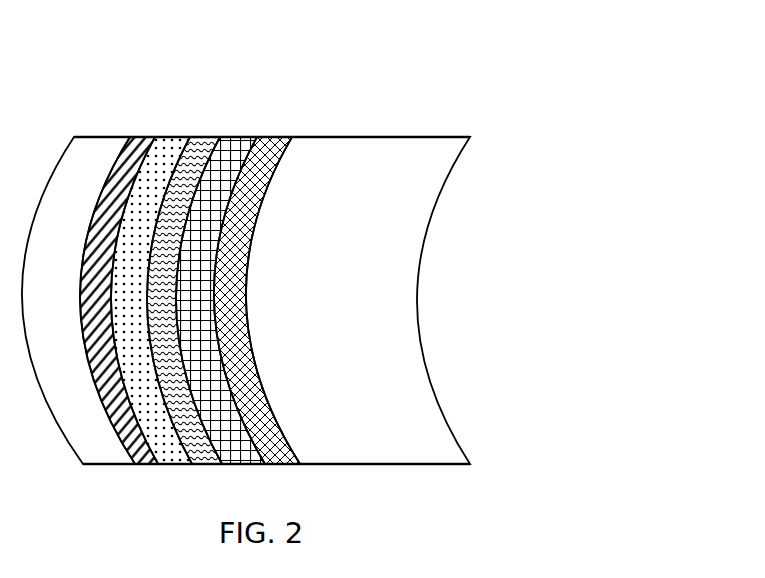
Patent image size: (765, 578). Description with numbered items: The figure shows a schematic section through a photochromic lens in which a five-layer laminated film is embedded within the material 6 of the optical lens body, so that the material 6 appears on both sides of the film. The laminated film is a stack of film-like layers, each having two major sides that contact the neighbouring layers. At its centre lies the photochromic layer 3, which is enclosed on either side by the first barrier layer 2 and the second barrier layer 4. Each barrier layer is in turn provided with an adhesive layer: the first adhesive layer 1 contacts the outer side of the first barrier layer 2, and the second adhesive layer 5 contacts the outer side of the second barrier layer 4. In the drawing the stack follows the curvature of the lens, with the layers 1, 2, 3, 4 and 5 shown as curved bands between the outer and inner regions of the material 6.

The first adhesive layer 1 is at (143, 137).
The first barrier layer 2 is at (179, 137).
The photochromic layer 3 is at (210, 137).
The second barrier layer 4 is at (239, 137).
The second adhesive layer 5 is at (279, 137).
The material of the optical lens body 6 is at (100, 137).